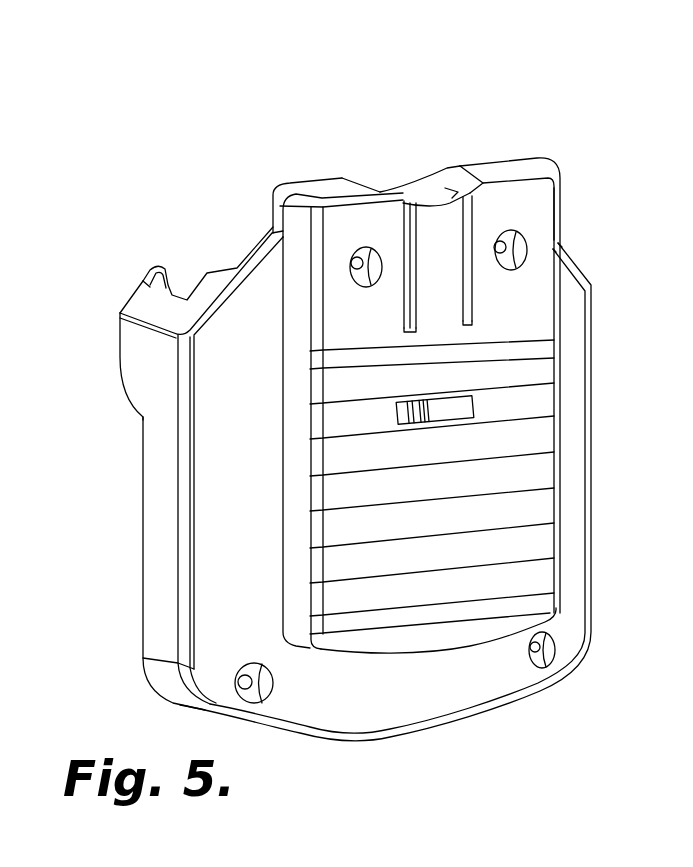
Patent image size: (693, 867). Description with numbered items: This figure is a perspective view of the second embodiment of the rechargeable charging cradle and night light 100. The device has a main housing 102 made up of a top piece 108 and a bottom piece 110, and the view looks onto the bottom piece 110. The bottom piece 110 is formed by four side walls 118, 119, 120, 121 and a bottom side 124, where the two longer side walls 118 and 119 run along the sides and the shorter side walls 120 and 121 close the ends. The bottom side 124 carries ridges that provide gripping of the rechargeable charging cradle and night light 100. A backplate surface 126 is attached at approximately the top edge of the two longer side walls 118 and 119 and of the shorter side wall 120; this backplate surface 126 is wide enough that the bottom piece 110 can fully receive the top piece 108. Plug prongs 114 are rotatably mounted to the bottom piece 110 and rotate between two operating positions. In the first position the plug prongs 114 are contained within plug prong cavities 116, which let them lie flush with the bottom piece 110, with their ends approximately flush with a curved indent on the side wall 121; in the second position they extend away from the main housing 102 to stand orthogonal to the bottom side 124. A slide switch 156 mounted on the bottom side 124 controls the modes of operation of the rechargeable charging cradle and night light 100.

The rechargeable charging cradle and night light 100 is at (279, 130).
The main housing 102 is at (353, 183).
The top piece 108 is at (127, 380).
The bottom piece 110 is at (213, 600).
The plug prongs 114 is at (416, 207).
The plug prong cavities 116 is at (467, 318).
The side wall 118 is at (296, 226).
The side wall 119 is at (554, 427).
The side wall 120 is at (370, 658).
The side wall 121 is at (510, 167).
The bottom side 124 is at (543, 316).
The backplate surface 126 is at (233, 423).
The slide switch 156 is at (422, 417).